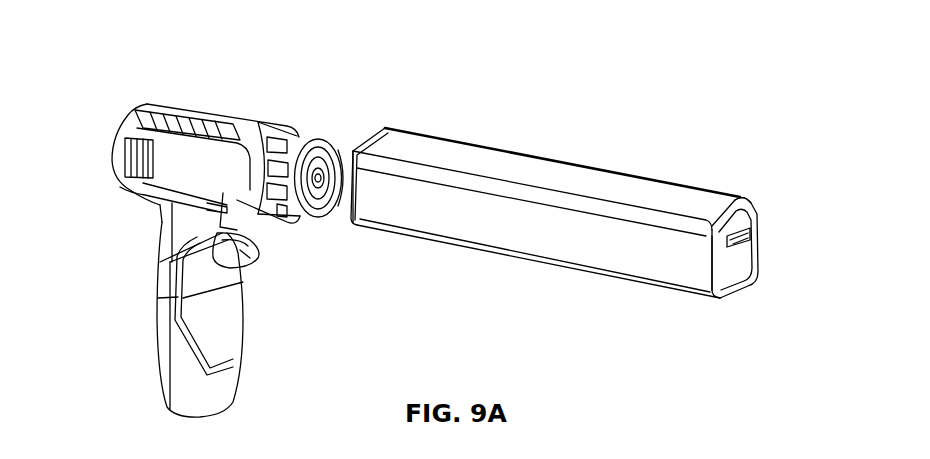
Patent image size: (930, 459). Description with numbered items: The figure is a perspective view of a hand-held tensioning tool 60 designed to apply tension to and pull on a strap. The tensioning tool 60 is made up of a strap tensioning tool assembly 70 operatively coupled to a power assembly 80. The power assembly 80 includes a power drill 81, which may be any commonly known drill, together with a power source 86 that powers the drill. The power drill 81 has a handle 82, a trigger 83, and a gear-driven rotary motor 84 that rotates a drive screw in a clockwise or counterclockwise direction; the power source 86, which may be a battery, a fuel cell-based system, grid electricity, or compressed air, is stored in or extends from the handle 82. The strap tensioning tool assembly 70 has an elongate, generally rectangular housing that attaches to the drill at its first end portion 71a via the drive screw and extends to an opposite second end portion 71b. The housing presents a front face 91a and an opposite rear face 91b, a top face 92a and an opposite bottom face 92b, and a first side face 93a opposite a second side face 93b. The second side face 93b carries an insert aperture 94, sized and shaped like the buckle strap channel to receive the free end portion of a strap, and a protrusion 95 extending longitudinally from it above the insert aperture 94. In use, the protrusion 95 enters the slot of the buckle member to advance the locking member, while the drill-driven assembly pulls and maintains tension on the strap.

The hand-held tensioning tool 60 is at (112, 24).
The power assembly 80 is at (393, 96).
The strap tensioning tool assembly 70 is at (753, 168).
The gear-driven rotary motor 84 is at (118, 127).
The power drill 81 is at (158, 223).
The handle 82 is at (240, 323).
The trigger 83 is at (260, 252).
The power source 86 is at (172, 393).
The first side face 93a is at (373, 122).
The first end portion of the housing 71a is at (363, 228).
The rear face 91b is at (605, 156).
The front face 91a is at (590, 260).
The bottom face 92b is at (648, 305).
The second end portion of the housing 71b is at (680, 280).
The second side face 93b is at (743, 285).
The top face 92a is at (730, 205).
The insert aperture 94 is at (737, 230).
The protrusion 95 is at (755, 248).